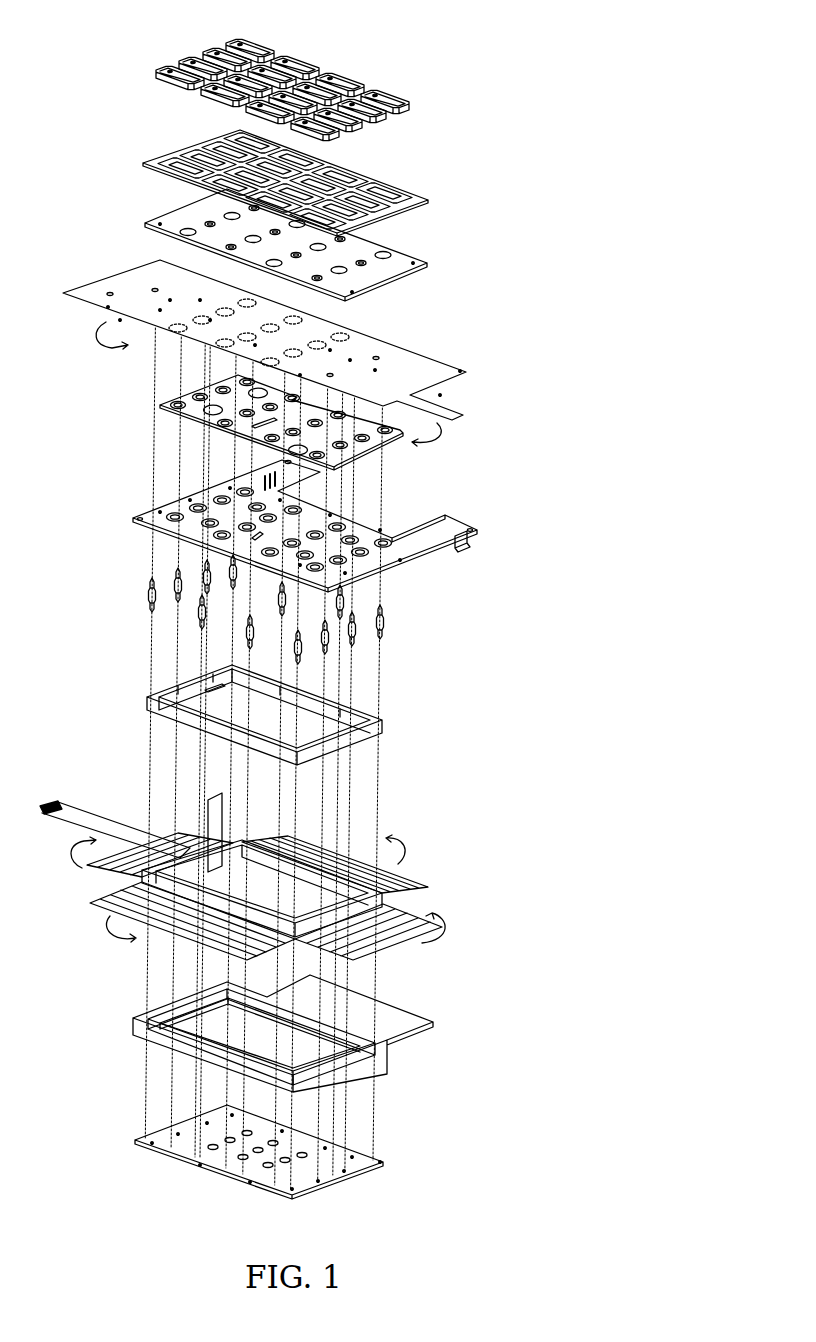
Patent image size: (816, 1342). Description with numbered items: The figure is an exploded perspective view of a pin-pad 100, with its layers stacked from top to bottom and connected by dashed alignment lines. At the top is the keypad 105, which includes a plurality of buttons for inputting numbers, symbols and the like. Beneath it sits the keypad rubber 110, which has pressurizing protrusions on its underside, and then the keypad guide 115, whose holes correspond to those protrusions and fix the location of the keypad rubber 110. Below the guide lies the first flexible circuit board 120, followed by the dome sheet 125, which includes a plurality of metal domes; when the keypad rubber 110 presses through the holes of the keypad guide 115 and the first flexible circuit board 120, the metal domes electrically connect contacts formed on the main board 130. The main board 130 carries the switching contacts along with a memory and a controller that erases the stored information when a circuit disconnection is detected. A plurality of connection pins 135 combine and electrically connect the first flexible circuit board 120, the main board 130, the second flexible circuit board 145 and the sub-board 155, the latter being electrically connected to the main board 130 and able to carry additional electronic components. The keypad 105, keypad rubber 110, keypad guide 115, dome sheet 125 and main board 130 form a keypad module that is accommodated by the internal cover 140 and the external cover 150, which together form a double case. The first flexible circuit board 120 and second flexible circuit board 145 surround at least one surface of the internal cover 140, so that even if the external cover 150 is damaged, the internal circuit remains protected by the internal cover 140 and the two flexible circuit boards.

The pin-pad 100 is at (104, 63).
The keypad 105 is at (413, 107).
The keypad rubber 110 is at (428, 200).
The keypad guide 115 is at (428, 263).
The first flexible circuit board 120 is at (467, 372).
The dome sheet 125 is at (373, 447).
The main board 130 is at (478, 532).
The connection pin 135 is at (385, 620).
The internal cover 140 is at (383, 728).
The second flexible circuit board 145 is at (437, 888).
The external cover 150 is at (435, 1023).
The sub-board 155 is at (385, 1163).